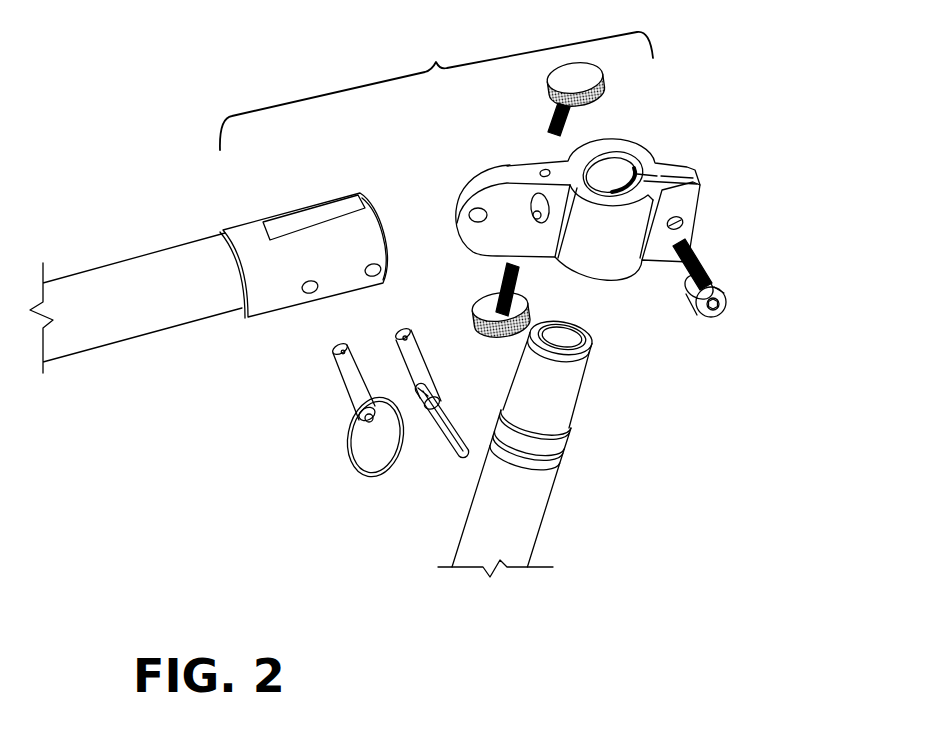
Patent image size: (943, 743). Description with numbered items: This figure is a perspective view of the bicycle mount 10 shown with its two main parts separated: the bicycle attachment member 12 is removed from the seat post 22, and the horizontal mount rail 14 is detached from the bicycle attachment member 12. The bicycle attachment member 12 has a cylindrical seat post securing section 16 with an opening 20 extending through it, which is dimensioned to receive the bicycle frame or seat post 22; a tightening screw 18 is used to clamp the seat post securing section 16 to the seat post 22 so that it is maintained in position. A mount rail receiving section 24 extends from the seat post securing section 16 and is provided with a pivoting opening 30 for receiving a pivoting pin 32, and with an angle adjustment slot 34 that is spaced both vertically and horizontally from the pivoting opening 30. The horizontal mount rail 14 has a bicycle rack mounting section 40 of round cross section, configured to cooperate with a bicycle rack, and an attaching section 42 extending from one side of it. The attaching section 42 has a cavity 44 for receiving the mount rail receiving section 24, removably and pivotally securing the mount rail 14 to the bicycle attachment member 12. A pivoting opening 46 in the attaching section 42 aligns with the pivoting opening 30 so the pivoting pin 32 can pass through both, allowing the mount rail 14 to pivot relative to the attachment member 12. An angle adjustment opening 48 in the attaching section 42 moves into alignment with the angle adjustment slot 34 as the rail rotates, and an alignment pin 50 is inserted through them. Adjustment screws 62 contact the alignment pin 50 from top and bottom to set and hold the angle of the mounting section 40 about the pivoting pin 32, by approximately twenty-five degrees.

The bicycle mount 10 is at (430, 62).
The bicycle attachment member 12 is at (716, 170).
The horizontal mount rail 14 is at (231, 345).
The seat post securing section 16 is at (647, 150).
The tightening screw 18 is at (720, 287).
The opening 20 is at (602, 165).
The seat post 22 is at (546, 518).
The mount rail receiving section 24 is at (532, 163).
The pivoting opening 30 is at (470, 213).
The pivoting pin 32 is at (347, 397).
The angle adjustment slot 34 is at (537, 227).
The bicycle rack mounting section 40 is at (163, 253).
The attaching section 42 is at (252, 218).
The cavity 44 is at (303, 218).
The pivoting opening 46 is at (317, 293).
The angle adjustment opening 48 is at (380, 283).
The alignment pin 50 is at (455, 455).
The adjustment screws 62 is at (547, 79).